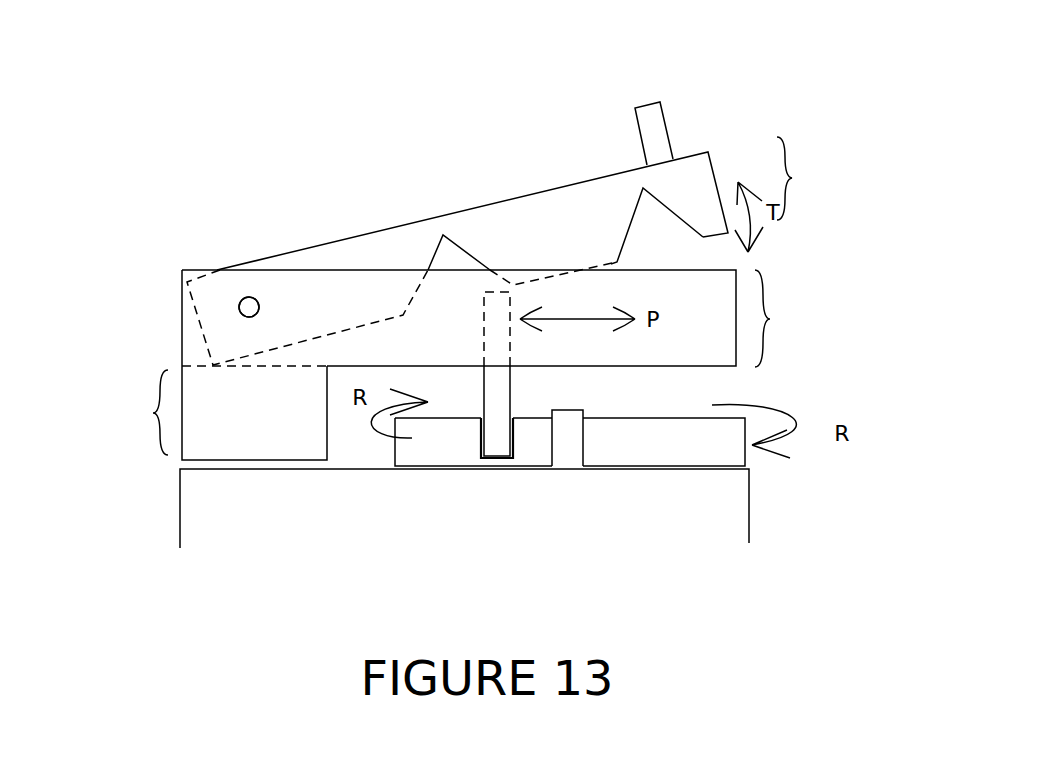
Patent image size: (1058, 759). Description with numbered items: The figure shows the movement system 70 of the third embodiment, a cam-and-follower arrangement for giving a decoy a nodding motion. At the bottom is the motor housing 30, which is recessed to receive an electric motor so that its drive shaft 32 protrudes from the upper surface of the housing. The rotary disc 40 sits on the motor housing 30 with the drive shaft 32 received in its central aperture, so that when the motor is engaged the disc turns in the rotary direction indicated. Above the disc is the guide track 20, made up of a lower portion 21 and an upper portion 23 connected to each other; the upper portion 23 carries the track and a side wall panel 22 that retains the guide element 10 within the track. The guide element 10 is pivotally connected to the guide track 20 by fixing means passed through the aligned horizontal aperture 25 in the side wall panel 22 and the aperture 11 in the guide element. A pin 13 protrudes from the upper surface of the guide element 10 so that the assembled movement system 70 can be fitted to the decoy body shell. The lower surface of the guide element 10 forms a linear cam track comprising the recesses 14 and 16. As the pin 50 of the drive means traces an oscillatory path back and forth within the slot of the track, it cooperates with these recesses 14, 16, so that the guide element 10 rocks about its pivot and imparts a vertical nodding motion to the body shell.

The guide element 10 is at (526, 203).
The pin 13 is at (652, 118).
The recess 14 is at (653, 208).
The recess 16 is at (447, 257).
The horizontal aperture 25 is at (240, 303).
The aperture 11 is at (249, 307).
The side wall panel 22 is at (703, 303).
The upper portion 23 is at (778, 318).
The lower portion 21 is at (145, 412).
The guide track 20 is at (280, 432).
The motor housing 30 is at (452, 530).
The rotary disc 40 is at (645, 453).
The pin 50 is at (500, 375).
The drive shaft 32 is at (570, 418).
The movement system 70 is at (138, 262).